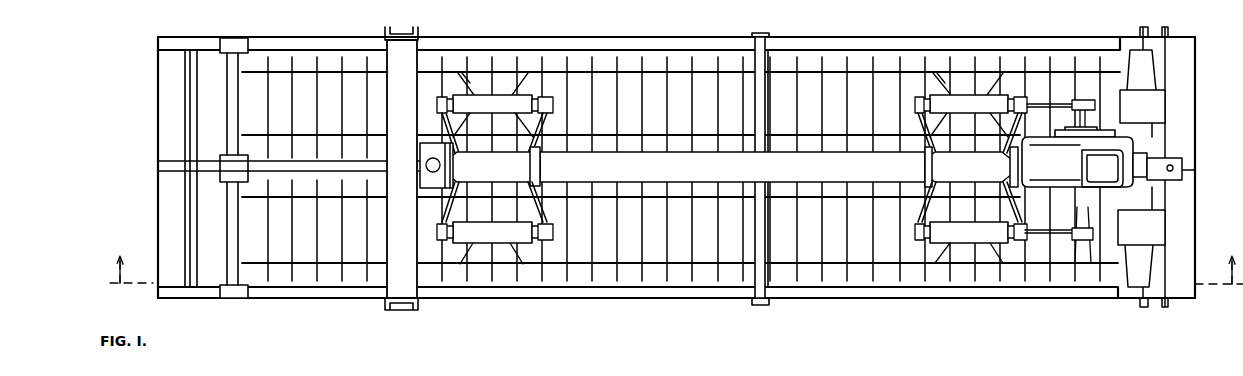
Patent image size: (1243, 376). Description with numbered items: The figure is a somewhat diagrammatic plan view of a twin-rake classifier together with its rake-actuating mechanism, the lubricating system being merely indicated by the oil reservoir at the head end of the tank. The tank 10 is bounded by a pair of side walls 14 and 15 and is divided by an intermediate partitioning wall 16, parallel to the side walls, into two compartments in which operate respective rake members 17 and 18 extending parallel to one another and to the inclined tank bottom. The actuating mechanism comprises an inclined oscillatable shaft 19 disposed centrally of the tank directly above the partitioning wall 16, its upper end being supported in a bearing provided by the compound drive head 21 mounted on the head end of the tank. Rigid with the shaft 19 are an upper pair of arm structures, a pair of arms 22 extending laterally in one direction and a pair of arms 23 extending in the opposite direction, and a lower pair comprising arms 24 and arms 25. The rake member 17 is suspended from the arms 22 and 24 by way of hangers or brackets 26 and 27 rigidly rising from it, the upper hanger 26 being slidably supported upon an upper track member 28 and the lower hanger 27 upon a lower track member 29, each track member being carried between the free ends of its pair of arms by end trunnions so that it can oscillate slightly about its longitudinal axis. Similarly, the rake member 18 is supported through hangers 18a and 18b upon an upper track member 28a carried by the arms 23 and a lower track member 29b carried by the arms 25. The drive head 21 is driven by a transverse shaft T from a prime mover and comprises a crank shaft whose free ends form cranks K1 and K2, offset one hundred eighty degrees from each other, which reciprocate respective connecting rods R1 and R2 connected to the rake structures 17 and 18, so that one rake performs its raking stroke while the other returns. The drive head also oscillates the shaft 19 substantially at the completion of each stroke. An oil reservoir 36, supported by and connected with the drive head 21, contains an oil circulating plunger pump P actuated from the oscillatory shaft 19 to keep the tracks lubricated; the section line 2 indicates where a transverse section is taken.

The section line 2- 2 is at (671, 268).
The tank 10 is at (358, 309).
The side wall 14 is at (587, 48).
The side wall 15 is at (610, 298).
The intermediate partitioning wall 16 is at (268, 171).
The rake member 17 is at (832, 72).
The rake member 18 is at (862, 268).
The hanger 18a is at (952, 256).
The hanger 18b is at (482, 250).
The oscillatable shaft 19 is at (705, 180).
The drive head 21 is at (1180, 199).
The arms 22 is at (998, 122).
The arms 23 is at (1005, 203).
The arms 24 is at (523, 122).
The arms 25 is at (528, 203).
The upper hanger 26 is at (984, 80).
The lower hanger 27 is at (508, 78).
The upper track member 28 is at (963, 103).
The upper track member 28a is at (975, 236).
The lower track member 29 is at (468, 105).
The lower track member 29b is at (500, 232).
The oil reservoir 36 is at (1175, 178).
The oil circulating plunger pump P is at (1162, 153).
The connecting rod R1 is at (1053, 100).
The connecting rod R2 is at (1048, 230).
The crank K1 is at (1086, 100).
The crank K2 is at (1084, 263).
The transverse shaft T is at (1132, 253).